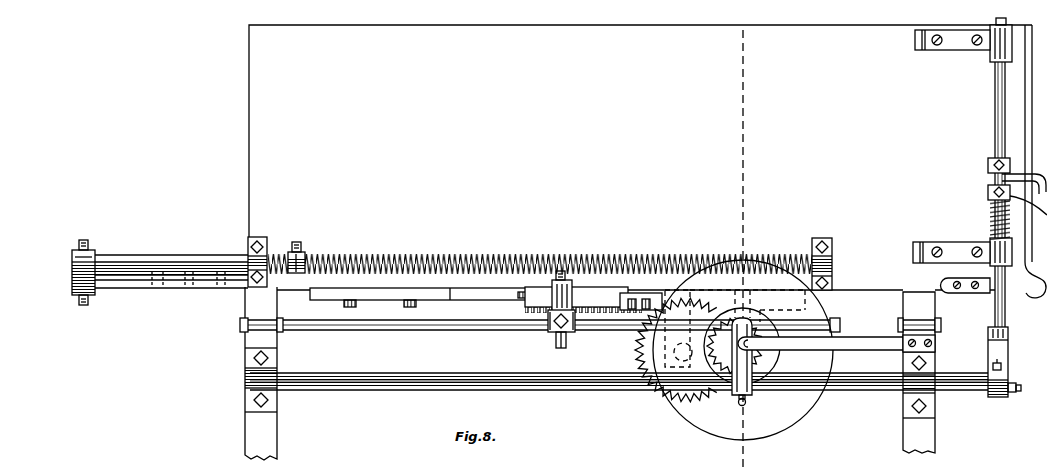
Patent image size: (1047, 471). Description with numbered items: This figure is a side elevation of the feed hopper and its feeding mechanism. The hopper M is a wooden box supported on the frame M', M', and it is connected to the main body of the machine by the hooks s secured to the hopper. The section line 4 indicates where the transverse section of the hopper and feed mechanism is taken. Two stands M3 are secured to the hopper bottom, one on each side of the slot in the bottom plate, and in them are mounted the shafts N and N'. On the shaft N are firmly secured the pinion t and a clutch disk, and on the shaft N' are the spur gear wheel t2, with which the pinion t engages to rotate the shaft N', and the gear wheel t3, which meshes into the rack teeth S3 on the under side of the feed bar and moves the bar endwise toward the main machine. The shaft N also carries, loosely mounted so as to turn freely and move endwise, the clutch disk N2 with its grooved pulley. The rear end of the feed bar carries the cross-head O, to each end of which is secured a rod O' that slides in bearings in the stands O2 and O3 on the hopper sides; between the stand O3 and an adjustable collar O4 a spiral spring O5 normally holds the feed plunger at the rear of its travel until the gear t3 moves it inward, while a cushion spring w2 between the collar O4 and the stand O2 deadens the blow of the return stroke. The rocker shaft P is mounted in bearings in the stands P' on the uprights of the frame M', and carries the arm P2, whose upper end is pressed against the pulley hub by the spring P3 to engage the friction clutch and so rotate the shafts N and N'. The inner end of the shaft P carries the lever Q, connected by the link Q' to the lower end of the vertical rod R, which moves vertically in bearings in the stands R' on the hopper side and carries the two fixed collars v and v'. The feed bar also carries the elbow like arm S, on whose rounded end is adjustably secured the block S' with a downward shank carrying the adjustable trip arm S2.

The hopper M is at (640, 157).
The frame M' is at (603, 373).
The stands M3 is at (641, 301).
The section line 4 is at (742, 239).
The cross-head O is at (72, 272).
The rod O' is at (171, 262).
The stand O2 is at (253, 241).
The stand O3 is at (834, 251).
The collar O4 is at (306, 258).
The spiral spring O5 is at (627, 256).
The spring w2 is at (285, 252).
The elbow like arm S is at (431, 302).
The block S' is at (573, 291).
The trip arm S2 is at (570, 332).
The rack teeth S3 is at (583, 300).
The pinion t is at (820, 343).
The spur gear wheel t2 is at (590, 334).
The gear wheel t3 is at (640, 356).
The shaft N is at (742, 346).
The shaft N' is at (720, 346).
The clutch disk N2 is at (743, 350).
The rocker shaft P is at (629, 393).
The stands P' is at (629, 381).
The arm P2 is at (745, 325).
The spring P3 is at (891, 348).
The vertical rod R is at (992, 172).
The stands R' is at (951, 161).
The collar v is at (1008, 175).
The collar v' is at (1007, 209).
The hook s is at (1026, 293).
The lever Q is at (1007, 401).
The link Q' is at (1007, 362).